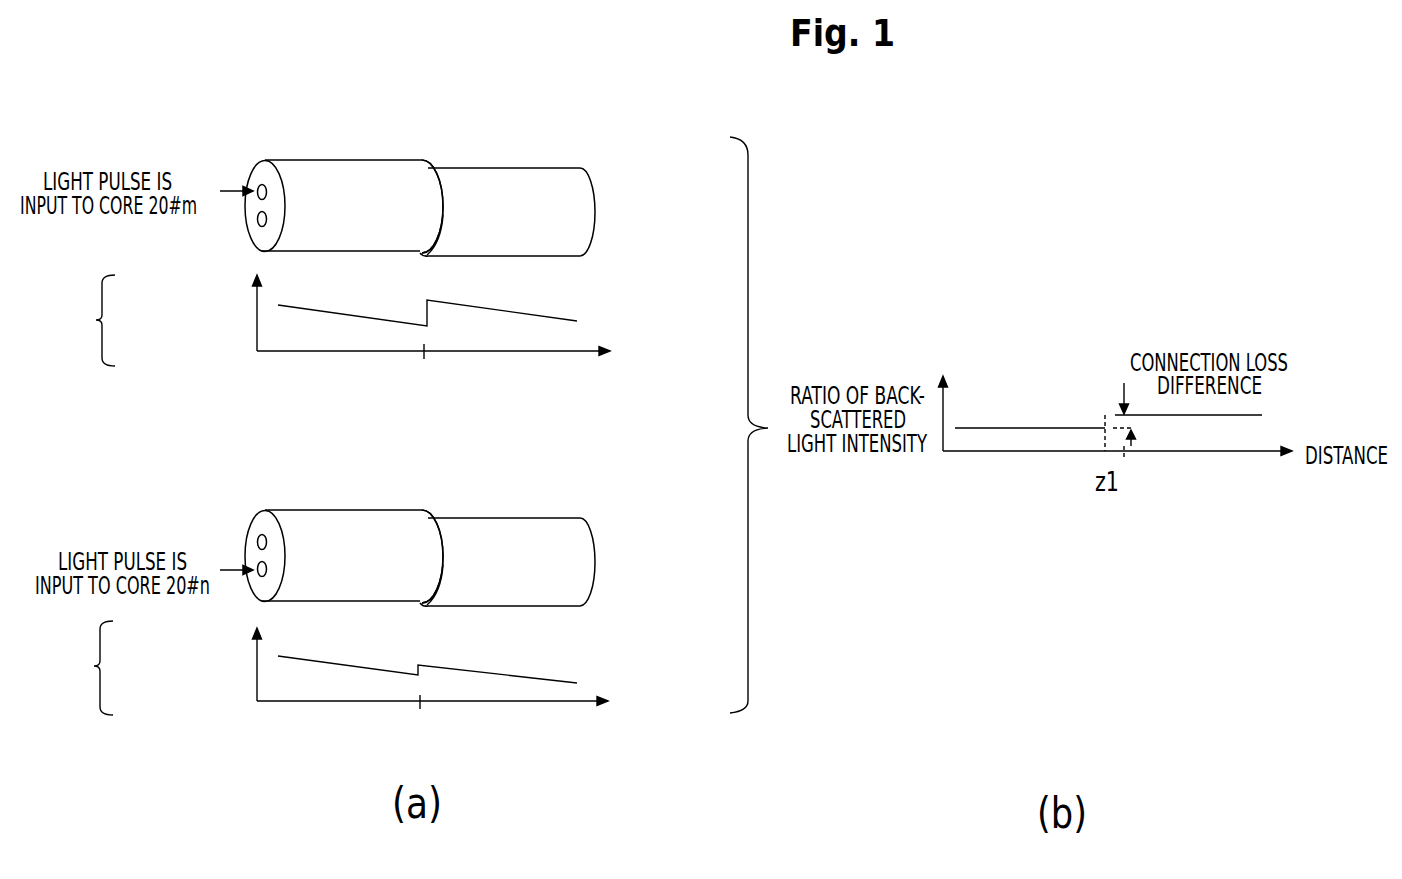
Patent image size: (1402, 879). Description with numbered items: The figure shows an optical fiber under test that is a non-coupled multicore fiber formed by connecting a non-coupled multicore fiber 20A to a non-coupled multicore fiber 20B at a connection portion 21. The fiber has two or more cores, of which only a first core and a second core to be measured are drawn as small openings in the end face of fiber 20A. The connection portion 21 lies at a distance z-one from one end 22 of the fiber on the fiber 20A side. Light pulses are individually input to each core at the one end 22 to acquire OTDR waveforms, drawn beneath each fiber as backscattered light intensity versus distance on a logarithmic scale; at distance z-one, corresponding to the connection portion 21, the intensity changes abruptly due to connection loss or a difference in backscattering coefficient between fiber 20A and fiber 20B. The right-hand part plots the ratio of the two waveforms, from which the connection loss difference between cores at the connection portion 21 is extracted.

The non-coupled multicore fiber 20A is at (322, 157).
The non-coupled multicore fiber 20B is at (533, 167).
The connection portion 21 is at (426, 143).
The one end 22 is at (235, 159).